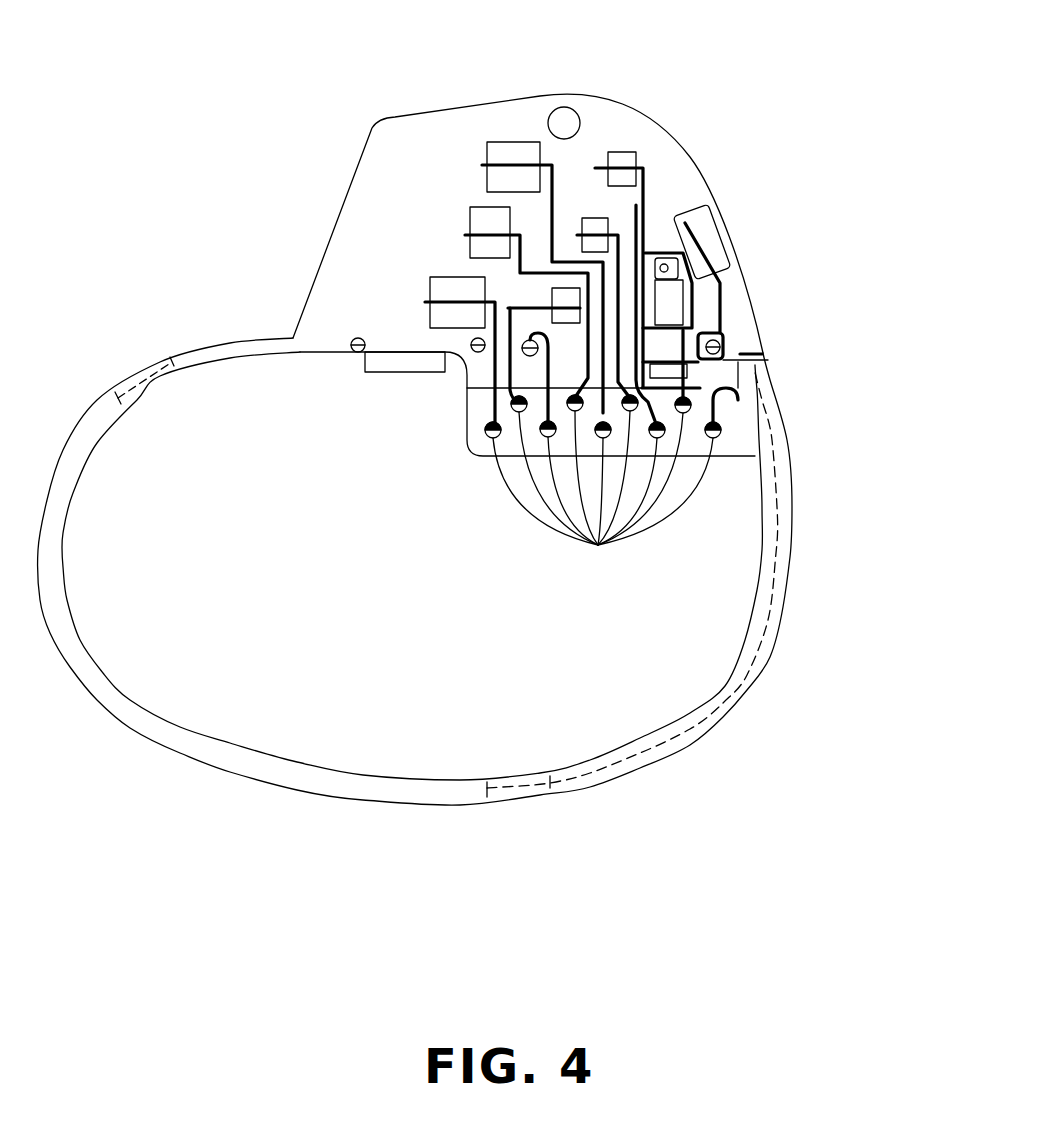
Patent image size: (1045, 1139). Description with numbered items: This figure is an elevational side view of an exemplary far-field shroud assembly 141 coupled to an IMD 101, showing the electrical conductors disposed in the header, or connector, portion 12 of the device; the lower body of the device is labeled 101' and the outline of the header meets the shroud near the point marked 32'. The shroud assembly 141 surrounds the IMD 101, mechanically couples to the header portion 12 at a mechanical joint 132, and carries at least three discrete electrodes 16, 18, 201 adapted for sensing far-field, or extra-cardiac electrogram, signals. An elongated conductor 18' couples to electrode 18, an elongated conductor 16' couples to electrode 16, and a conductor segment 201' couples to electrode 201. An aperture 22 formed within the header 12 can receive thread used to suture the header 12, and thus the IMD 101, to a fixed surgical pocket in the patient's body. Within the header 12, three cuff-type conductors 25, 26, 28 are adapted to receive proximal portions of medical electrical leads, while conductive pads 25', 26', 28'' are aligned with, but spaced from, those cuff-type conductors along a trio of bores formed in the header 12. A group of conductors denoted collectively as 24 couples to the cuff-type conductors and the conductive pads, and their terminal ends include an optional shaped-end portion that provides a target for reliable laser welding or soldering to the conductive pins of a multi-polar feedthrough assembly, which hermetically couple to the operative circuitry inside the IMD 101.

The IMD 101 is at (474, 408).
The header portion 12 is at (374, 125).
The housing body 101' is at (336, 578).
The shroud assembly 141 is at (90, 702).
The elongated conductor 18' is at (674, 587).
The electrode 18 is at (494, 846).
The electrode 16 is at (104, 334).
The junction 32' is at (247, 307).
The mechanical joint 132 is at (773, 338).
The aperture 22 is at (566, 122).
The cuff-type conductor 25 is at (521, 243).
The cuff-type conductor 26 is at (499, 281).
The connector block 28 is at (436, 331).
The conductive pad 25' is at (628, 234).
The conductive pad 26' is at (650, 232).
The conductive pad 28'' is at (643, 266).
The electrode 201 is at (740, 268).
The conductor segment 201' is at (787, 388).
The elongated conductor 16' is at (527, 364).
The conductors 24 is at (603, 489).